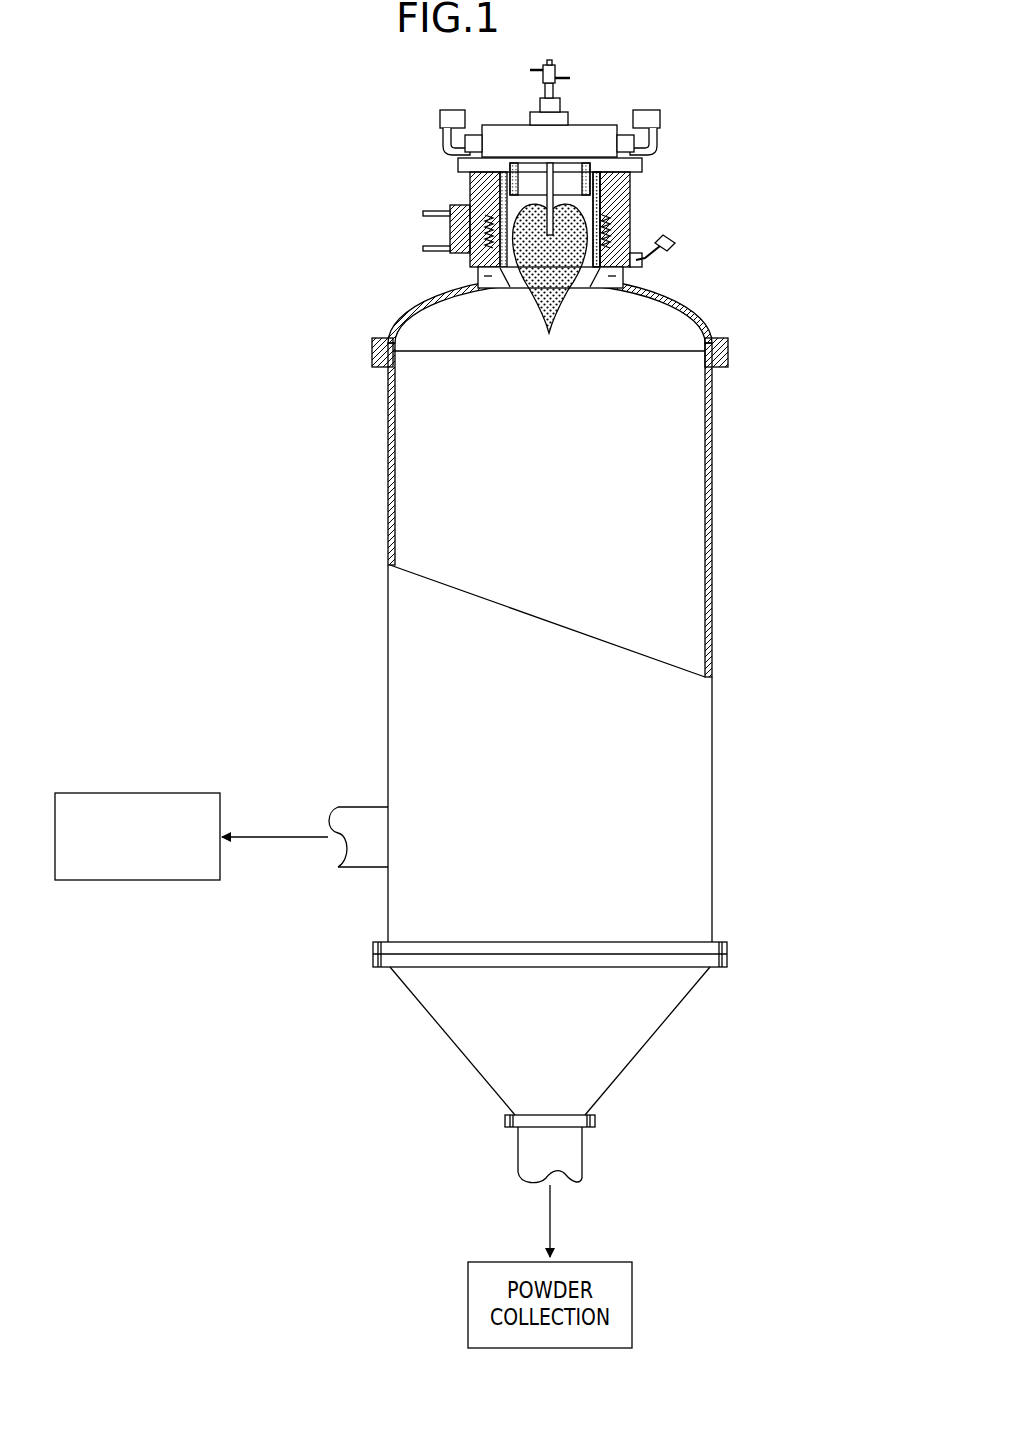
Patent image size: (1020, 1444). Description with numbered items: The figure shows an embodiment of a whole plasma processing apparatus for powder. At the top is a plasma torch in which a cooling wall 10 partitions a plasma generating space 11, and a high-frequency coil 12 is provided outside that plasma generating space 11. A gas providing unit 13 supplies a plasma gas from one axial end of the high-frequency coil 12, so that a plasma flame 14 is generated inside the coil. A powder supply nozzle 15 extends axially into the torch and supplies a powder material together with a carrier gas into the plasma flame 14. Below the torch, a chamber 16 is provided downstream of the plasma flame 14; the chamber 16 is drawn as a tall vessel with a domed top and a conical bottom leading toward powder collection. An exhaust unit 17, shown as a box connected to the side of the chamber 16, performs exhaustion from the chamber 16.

The cooling wall 10 is at (470, 188).
The plasma generating space 11 is at (588, 212).
The high-frequency coil 12 is at (457, 240).
The gas providing unit 13 is at (439, 118).
The plasma flame 14 is at (557, 303).
The powder supply nozzle 15 is at (553, 183).
The chamber 16 is at (718, 537).
The exhaust unit 17 is at (137, 793).